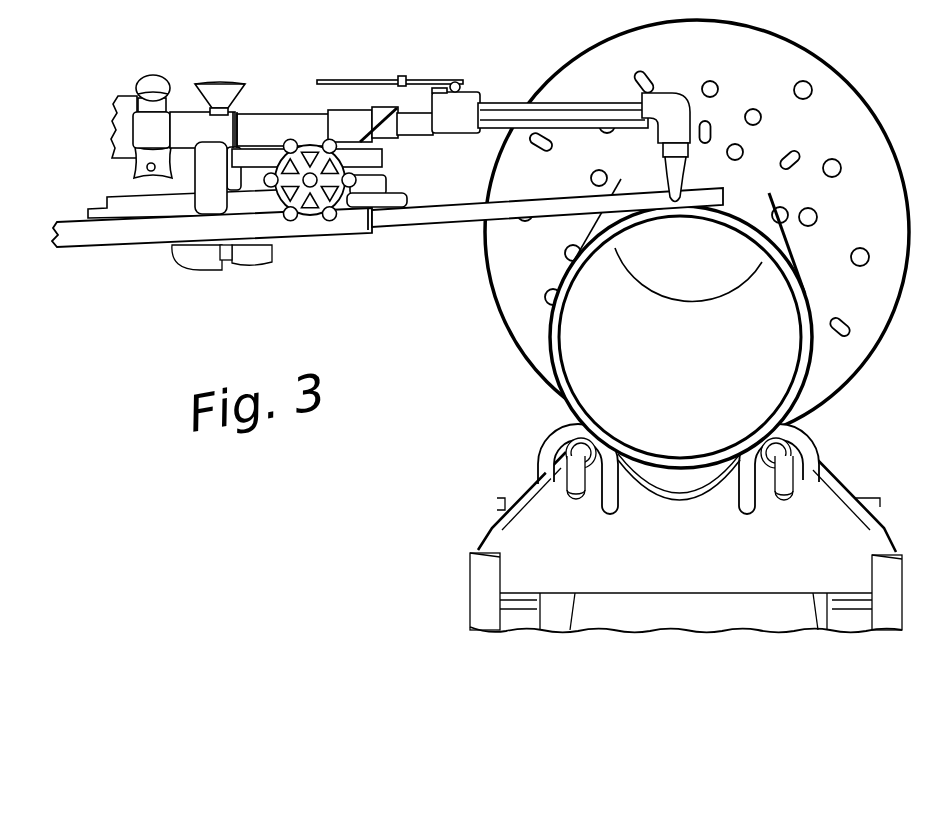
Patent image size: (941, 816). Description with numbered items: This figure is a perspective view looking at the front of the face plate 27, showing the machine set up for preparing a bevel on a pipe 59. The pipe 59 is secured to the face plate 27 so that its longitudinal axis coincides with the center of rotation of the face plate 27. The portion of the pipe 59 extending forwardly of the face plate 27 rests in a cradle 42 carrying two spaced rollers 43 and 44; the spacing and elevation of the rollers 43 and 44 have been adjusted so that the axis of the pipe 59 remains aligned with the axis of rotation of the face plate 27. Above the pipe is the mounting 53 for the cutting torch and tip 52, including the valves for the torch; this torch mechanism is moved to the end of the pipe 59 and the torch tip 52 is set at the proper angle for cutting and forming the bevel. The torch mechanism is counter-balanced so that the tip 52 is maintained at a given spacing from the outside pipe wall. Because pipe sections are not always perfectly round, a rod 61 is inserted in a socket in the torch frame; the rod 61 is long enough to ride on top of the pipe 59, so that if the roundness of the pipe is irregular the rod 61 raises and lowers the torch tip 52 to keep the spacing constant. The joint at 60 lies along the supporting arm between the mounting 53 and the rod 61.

The face plate 27 is at (733, 58).
The cradle 42 is at (705, 554).
The roller 43 is at (548, 451).
The roller 44 is at (808, 444).
The torch tip 52 is at (673, 175).
The mounting 53 is at (57, 239).
The pipe 59 is at (701, 383).
The joint 60 is at (361, 224).
The rod 61 is at (475, 207).